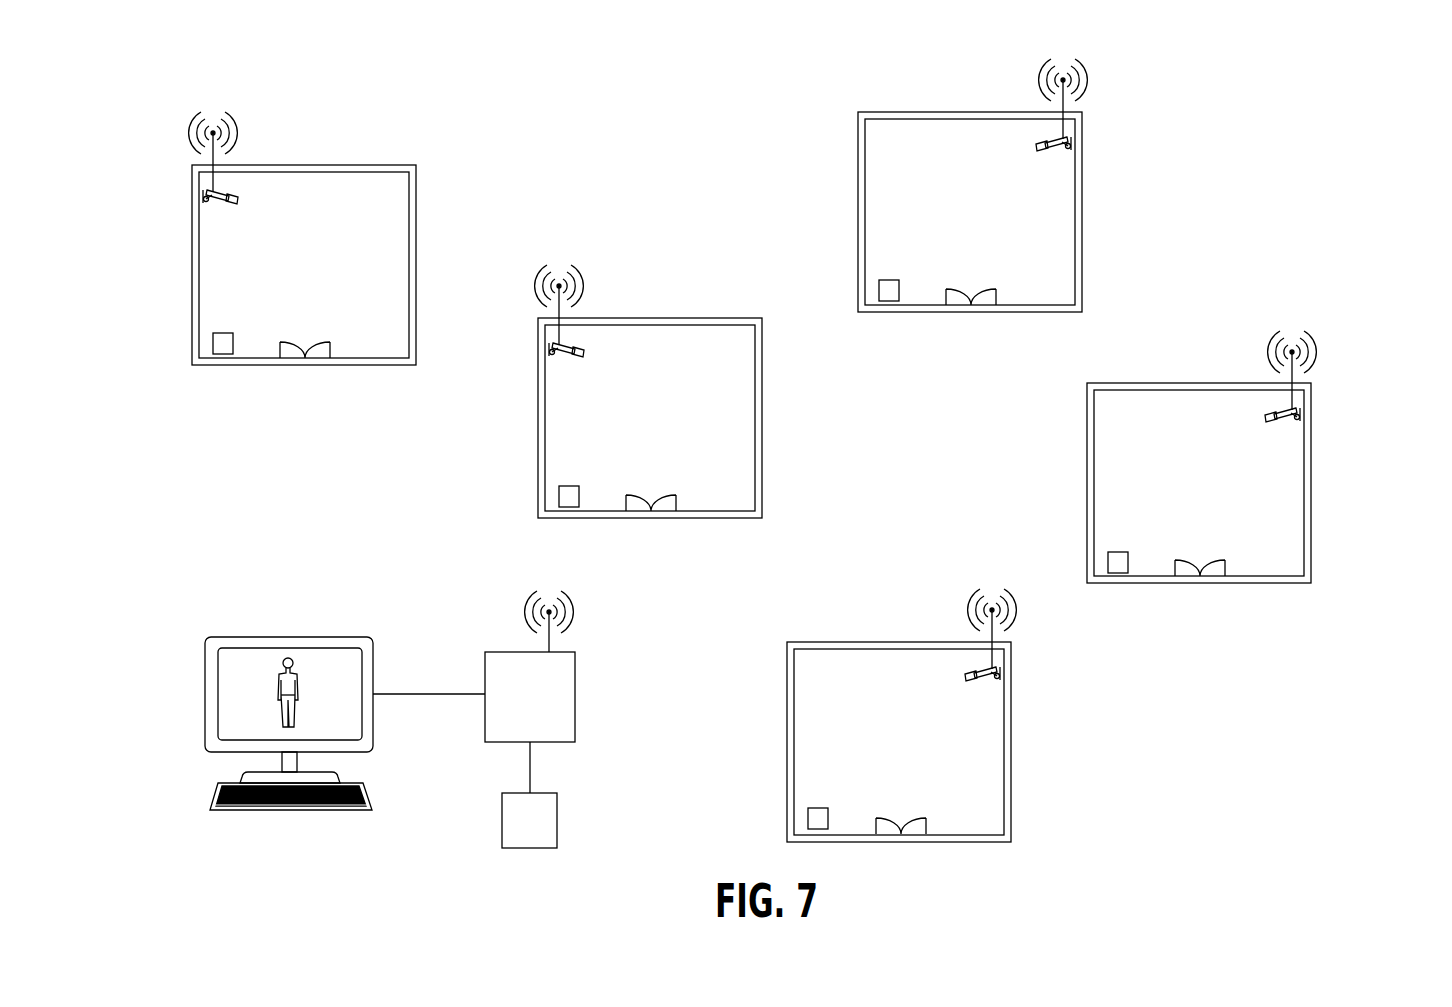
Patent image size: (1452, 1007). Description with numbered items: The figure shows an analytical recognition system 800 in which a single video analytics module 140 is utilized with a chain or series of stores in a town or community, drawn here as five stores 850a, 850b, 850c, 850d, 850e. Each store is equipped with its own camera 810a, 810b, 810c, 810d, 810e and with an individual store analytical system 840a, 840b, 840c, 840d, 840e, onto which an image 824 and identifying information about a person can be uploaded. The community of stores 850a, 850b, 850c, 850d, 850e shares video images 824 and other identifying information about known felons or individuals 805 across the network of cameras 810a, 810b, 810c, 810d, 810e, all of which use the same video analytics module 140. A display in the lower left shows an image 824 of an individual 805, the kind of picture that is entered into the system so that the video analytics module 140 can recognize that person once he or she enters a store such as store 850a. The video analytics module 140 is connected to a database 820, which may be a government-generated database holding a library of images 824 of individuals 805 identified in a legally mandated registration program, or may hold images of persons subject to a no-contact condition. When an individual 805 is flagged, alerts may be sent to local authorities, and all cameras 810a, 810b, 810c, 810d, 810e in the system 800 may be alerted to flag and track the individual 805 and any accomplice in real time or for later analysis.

The analytical recognition system 800 is at (1216, 114).
The camera 810a is at (203, 191).
The camera 810b is at (549, 345).
The camera 810c is at (1072, 139).
The camera 810d is at (1301, 410).
The camera 810e is at (1001, 669).
The store 850a is at (402, 257).
The store 850b is at (748, 410).
The store 850c is at (1068, 234).
The store 850d is at (1297, 489).
The store 850e is at (997, 734).
The individual store analytical system 840a is at (213, 345).
The individual store analytical system 840b is at (559, 496).
The individual store analytical system 840c is at (879, 290).
The individual store analytical system 840d is at (1108, 562).
The individual store analytical system 840e is at (808, 818).
The individual 805 is at (288, 657).
The video image 824 is at (237, 690).
The video analytics module 140 is at (575, 695).
The database 820 is at (557, 820).